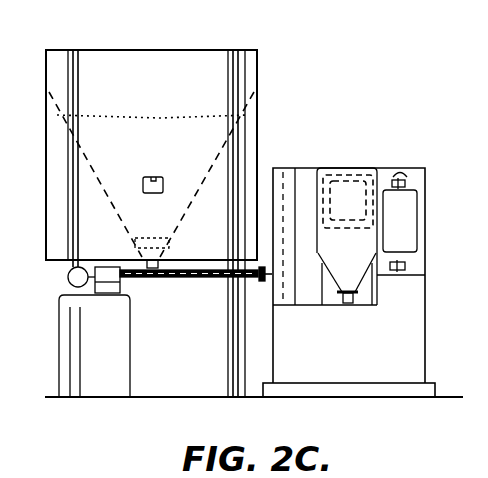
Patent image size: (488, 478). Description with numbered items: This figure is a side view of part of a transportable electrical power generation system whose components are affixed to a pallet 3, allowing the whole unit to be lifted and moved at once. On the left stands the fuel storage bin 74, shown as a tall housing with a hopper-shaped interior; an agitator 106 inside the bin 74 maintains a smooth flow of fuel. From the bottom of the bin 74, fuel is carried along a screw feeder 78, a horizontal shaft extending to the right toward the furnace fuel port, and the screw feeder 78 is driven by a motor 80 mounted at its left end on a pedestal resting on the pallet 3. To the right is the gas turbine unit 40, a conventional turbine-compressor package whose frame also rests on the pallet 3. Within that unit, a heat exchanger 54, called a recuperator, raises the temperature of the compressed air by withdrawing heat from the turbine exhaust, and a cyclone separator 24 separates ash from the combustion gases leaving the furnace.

The pallet 3 is at (336, 392).
The cyclone separator 24 is at (338, 173).
The gas turbine unit 40 is at (420, 311).
The heat exchanger 54 is at (418, 200).
The fuel storage bin 74 is at (177, 50).
The screw feeder 78 is at (216, 278).
The motor 80 is at (68, 276).
The agitator 106 is at (153, 177).